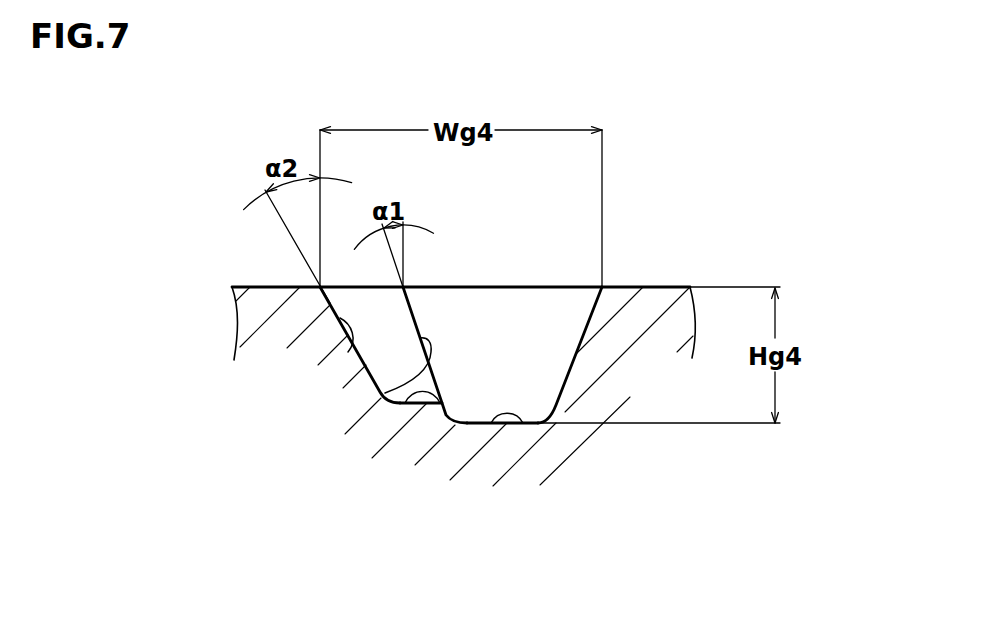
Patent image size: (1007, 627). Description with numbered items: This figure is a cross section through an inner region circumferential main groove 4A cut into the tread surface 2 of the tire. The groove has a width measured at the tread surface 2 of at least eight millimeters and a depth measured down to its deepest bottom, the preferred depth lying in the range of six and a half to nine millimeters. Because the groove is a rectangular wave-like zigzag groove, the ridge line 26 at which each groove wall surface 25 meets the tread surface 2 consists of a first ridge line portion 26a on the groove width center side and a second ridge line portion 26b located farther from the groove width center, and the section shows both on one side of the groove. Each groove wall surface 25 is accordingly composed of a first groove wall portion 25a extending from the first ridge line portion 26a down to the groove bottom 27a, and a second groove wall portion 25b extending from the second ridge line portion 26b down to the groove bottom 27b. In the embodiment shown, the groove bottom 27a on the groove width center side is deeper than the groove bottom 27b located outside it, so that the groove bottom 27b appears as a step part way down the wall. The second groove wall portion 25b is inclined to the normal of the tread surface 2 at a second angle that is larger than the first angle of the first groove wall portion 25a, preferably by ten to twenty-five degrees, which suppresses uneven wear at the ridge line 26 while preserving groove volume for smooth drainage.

The tread surface 2 is at (262, 286).
The inner region circumferential main groove 4A is at (550, 374).
The groove wall surface 25 is at (156, 352).
The first groove wall portion 25a is at (385, 393).
The second groove wall portion 25b is at (348, 352).
The ridge line 26 is at (606, 282).
The first ridge line portion 26a is at (413, 280).
The second ridge line portion 26b is at (323, 282).
The groove bottom 27a is at (520, 423).
The groove bottom 27b is at (442, 404).